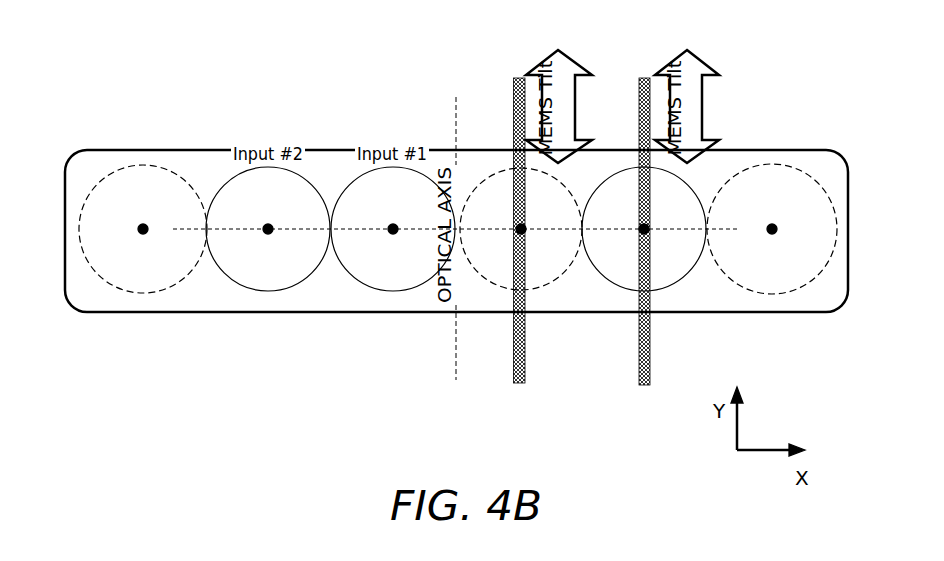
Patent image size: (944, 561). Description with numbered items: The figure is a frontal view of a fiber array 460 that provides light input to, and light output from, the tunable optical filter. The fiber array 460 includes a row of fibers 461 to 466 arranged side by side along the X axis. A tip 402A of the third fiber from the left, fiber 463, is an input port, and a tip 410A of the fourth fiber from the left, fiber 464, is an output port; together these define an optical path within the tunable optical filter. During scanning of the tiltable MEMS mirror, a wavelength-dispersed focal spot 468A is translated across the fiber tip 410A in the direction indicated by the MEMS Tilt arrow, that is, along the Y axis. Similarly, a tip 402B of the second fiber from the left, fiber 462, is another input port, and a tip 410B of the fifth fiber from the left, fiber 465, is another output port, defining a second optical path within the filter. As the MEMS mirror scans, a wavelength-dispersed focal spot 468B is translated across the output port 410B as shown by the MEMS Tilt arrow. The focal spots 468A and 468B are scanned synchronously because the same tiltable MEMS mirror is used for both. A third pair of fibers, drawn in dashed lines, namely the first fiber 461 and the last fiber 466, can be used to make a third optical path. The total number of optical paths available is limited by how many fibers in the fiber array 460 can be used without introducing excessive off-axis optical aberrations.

The fiber array 460 is at (178, 150).
The first fiber 461 is at (142, 292).
The second fiber 462 is at (253, 292).
The third fiber 463 is at (385, 292).
The fourth fiber 464 is at (487, 292).
The fifth fiber 465 is at (607, 292).
The last fiber 466 is at (735, 292).
The fiber tip 402A is at (403, 218).
The fiber tip 402B is at (282, 214).
The fiber tip 410A is at (521, 229).
The fiber tip 410B is at (644, 229).
The wavelength-dispersed focal spot 468A is at (514, 112).
The wavelength-dispersed focal spot 468B is at (640, 122).